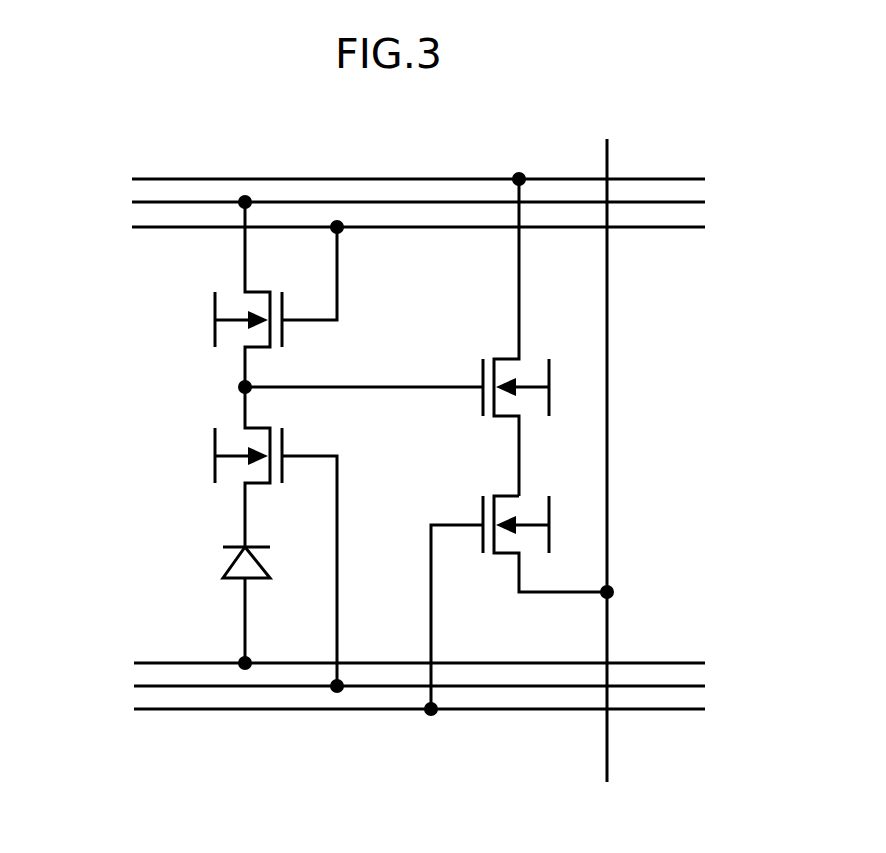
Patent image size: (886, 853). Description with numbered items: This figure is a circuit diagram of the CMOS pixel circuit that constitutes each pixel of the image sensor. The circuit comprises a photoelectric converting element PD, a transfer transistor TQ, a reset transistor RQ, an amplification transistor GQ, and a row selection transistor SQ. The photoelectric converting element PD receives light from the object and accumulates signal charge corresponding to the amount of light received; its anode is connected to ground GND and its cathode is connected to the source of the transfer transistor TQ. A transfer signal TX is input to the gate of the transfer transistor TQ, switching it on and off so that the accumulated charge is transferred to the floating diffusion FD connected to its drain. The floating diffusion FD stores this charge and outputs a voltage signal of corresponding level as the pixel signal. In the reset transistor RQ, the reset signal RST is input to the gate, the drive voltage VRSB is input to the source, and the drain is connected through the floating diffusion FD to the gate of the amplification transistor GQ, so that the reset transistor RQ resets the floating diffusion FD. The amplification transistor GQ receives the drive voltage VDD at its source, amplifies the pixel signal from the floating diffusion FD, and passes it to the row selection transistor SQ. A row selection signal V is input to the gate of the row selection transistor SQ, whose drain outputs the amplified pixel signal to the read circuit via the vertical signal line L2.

The drive voltage VDD is at (387, 173).
The drive voltage VRSB is at (378, 197).
The reset signal RST is at (45, 239).
The ground GND is at (386, 658).
The transfer signal TX is at (69, 700).
The row selection signal V is at (84, 725).
The vertical signal line L2 is at (609, 621).
The reset transistor RQ is at (252, 291).
The floating diffusion FD is at (339, 387).
The transfer transistor TQ is at (251, 540).
The photoelectric converting element PD is at (215, 608).
The amplification transistor GQ is at (490, 334).
The row selection transistor SQ is at (515, 599).